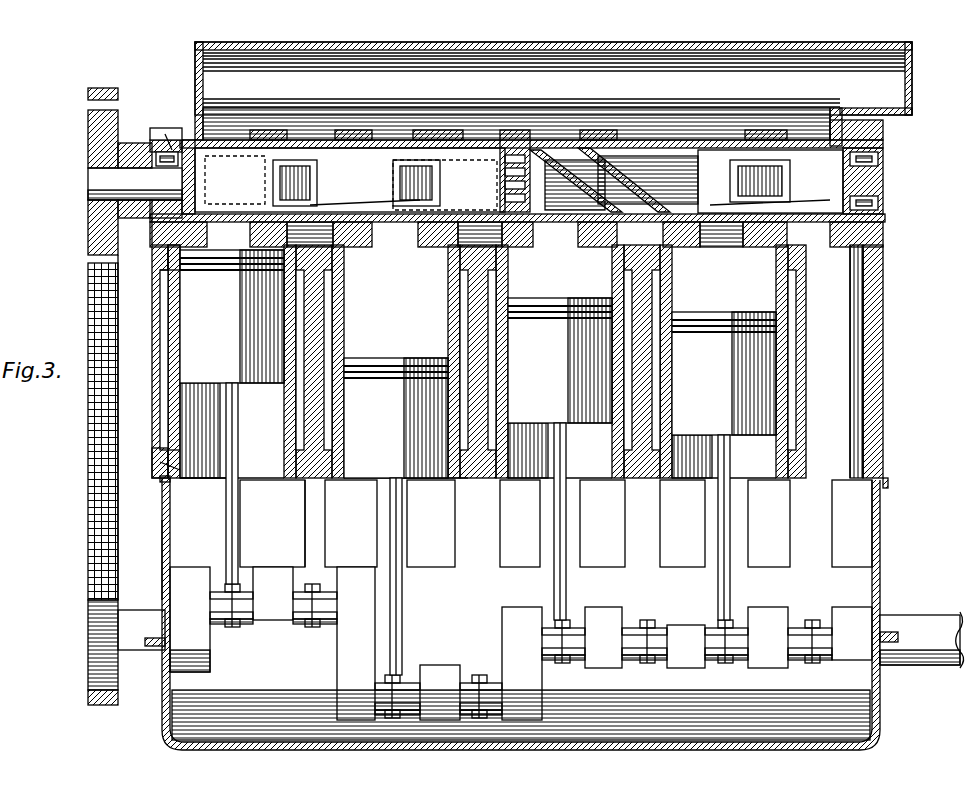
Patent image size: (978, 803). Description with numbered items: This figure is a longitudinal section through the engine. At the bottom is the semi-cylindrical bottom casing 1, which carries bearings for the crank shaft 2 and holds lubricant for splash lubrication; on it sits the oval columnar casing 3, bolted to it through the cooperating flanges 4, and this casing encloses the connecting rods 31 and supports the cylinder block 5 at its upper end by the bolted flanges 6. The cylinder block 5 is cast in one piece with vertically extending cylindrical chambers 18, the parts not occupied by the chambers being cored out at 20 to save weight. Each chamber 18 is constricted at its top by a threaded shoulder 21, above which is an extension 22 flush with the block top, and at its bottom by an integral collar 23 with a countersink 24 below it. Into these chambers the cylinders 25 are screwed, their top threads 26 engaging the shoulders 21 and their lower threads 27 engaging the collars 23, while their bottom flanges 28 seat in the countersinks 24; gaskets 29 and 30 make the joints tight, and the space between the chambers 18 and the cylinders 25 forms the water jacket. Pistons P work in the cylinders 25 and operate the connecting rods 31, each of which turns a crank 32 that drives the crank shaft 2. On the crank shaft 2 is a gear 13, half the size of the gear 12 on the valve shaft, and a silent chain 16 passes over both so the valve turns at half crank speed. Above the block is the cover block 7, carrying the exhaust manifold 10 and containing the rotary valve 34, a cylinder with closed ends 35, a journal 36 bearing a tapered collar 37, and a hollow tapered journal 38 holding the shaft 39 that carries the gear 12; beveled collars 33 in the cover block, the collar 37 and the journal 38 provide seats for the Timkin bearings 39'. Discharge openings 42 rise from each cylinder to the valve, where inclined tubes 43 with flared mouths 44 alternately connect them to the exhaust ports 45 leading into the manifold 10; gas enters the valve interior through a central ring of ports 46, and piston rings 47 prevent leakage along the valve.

The bottom casing 1 is at (162, 704).
The crank shaft 2 is at (962, 618).
The columnar casing 3 is at (162, 572).
The flanges 4 is at (896, 638).
The cylinder block 5 is at (310, 410).
The flanges 6 is at (884, 482).
The cover block 7 is at (884, 222).
The exhaust manifold 10 is at (214, 46).
The gear 12 is at (96, 138).
The gear 13 is at (100, 645).
The silent chain 16 is at (103, 84).
The cylindrical chambers 18 is at (174, 318).
The cored out parts 20 is at (858, 322).
The threaded shoulders 21 is at (170, 254).
The extensions 22 is at (336, 228).
The collars 23 is at (160, 462).
The countersinks 24 is at (162, 478).
The cylinders 25 is at (166, 290).
The threads 26 is at (162, 272).
The threads 27 is at (190, 456).
The bottom flanges 28 is at (458, 480).
The gasket 29 is at (430, 262).
The gasket 30 is at (182, 482).
The connecting rods 31 is at (240, 530).
The crank 32 is at (186, 570).
The beveled collars 33 is at (156, 146).
The rotary valve 34 is at (838, 138).
The closed ends 35 is at (252, 176).
The journal 36 is at (884, 182).
The tapered collar 37 is at (884, 155).
The hollow tapered journal 38 is at (162, 134).
The shaft 39 is at (499, 189).
The Timkin bearings 39' is at (178, 127).
The discharge openings 42 is at (452, 228).
The tubes 43 is at (392, 182).
The flared mouths 44 is at (612, 200).
The exhaust ports 45 is at (268, 140).
The ring of ports 46 is at (514, 140).
The piston rings 47 is at (375, 215).
The pistons P is at (262, 378).